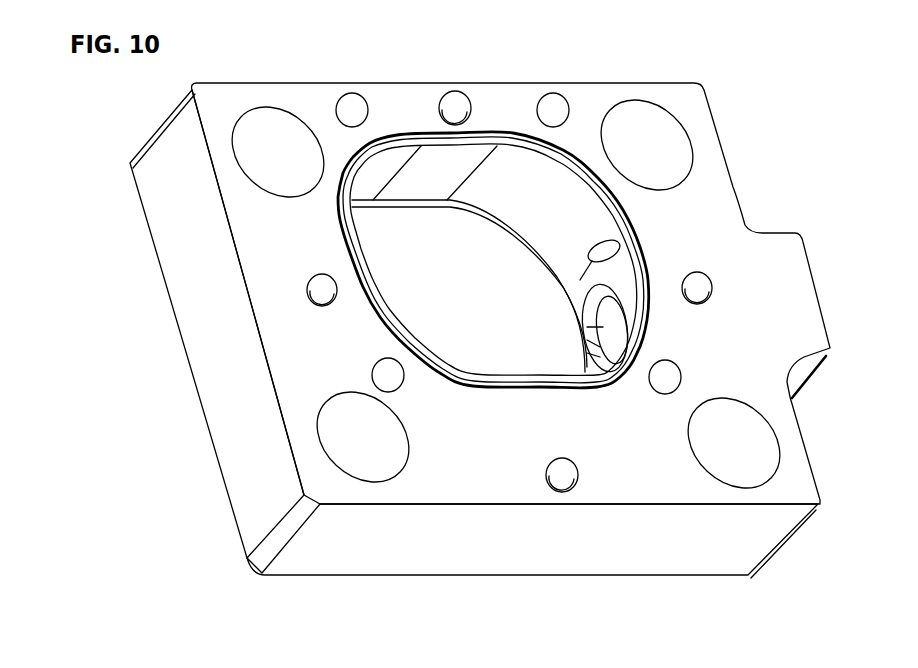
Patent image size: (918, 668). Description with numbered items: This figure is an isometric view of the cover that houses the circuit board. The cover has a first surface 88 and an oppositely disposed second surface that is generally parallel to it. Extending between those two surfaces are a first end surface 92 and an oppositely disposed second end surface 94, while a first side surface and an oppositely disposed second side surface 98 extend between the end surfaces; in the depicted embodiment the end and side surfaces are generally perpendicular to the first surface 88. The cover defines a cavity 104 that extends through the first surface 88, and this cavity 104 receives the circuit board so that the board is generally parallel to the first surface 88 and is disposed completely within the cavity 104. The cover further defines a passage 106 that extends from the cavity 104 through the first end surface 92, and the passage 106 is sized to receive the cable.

The first end surface 92 is at (480, 330).
The first surface 88 is at (511, 294).
The second end surface 94 is at (236, 341).
The second side surface 98 is at (561, 549).
The cavity 104 is at (606, 243).
The passage 106 is at (615, 308).